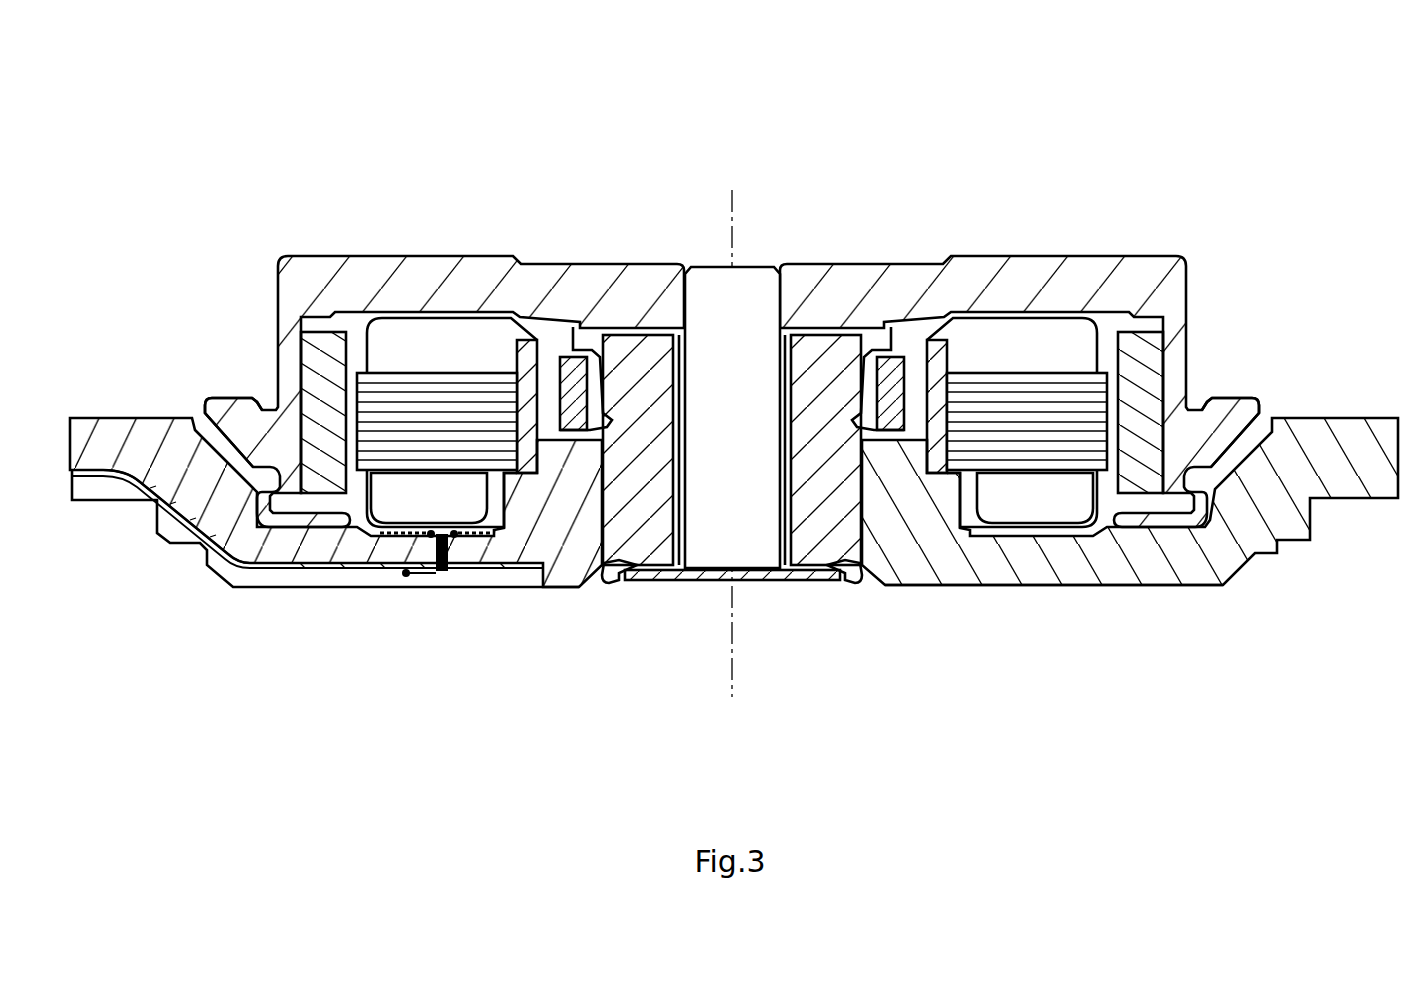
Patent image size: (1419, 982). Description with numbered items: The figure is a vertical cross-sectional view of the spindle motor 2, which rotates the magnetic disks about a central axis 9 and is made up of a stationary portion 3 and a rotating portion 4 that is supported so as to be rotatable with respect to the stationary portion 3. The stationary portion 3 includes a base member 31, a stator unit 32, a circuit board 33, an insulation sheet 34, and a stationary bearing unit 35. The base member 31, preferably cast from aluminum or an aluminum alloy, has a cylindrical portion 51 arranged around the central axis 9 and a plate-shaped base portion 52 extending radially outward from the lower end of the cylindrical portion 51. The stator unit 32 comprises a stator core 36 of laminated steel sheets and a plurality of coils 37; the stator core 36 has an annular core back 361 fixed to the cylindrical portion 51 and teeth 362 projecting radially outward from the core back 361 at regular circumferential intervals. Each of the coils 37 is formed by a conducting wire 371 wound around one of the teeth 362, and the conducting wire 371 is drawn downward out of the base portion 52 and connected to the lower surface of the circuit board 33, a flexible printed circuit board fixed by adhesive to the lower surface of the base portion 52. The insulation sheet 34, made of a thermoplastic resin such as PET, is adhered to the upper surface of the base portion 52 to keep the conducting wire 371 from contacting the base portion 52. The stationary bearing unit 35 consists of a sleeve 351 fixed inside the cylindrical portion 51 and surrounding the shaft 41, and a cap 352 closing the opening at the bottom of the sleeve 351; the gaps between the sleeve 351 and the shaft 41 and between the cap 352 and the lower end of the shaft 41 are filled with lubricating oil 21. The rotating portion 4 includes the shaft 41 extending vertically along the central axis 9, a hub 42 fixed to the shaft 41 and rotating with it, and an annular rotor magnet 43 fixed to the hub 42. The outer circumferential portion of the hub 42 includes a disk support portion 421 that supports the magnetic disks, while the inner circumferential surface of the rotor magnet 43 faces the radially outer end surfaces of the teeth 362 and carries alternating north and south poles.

The spindle motor 2 is at (397, 149).
The stationary portion 3 is at (849, 612).
The rotating portion 4 is at (336, 237).
The central axis 9 is at (732, 191).
The lubricating oil 21 is at (583, 325).
The base member 31 is at (948, 650).
The stator unit 32 is at (1103, 146).
The circuit board 33 is at (275, 568).
The insulation sheet 34 is at (478, 568).
The stationary bearing unit 35 is at (622, 680).
The stator core 36 is at (955, 198).
The coils 37 is at (1076, 350).
The shaft 41 is at (755, 292).
The hub 42 is at (851, 292).
The rotor magnet 43 is at (1143, 452).
The cylindrical portion 51 is at (920, 490).
The base portion 52 is at (1045, 567).
The sleeve 351 is at (637, 520).
The cap 352 is at (686, 576).
The core back 361 is at (962, 410).
The teeth 362 is at (1027, 410).
The conducting wire 371 is at (433, 574).
The disk support portion 421 is at (1240, 410).